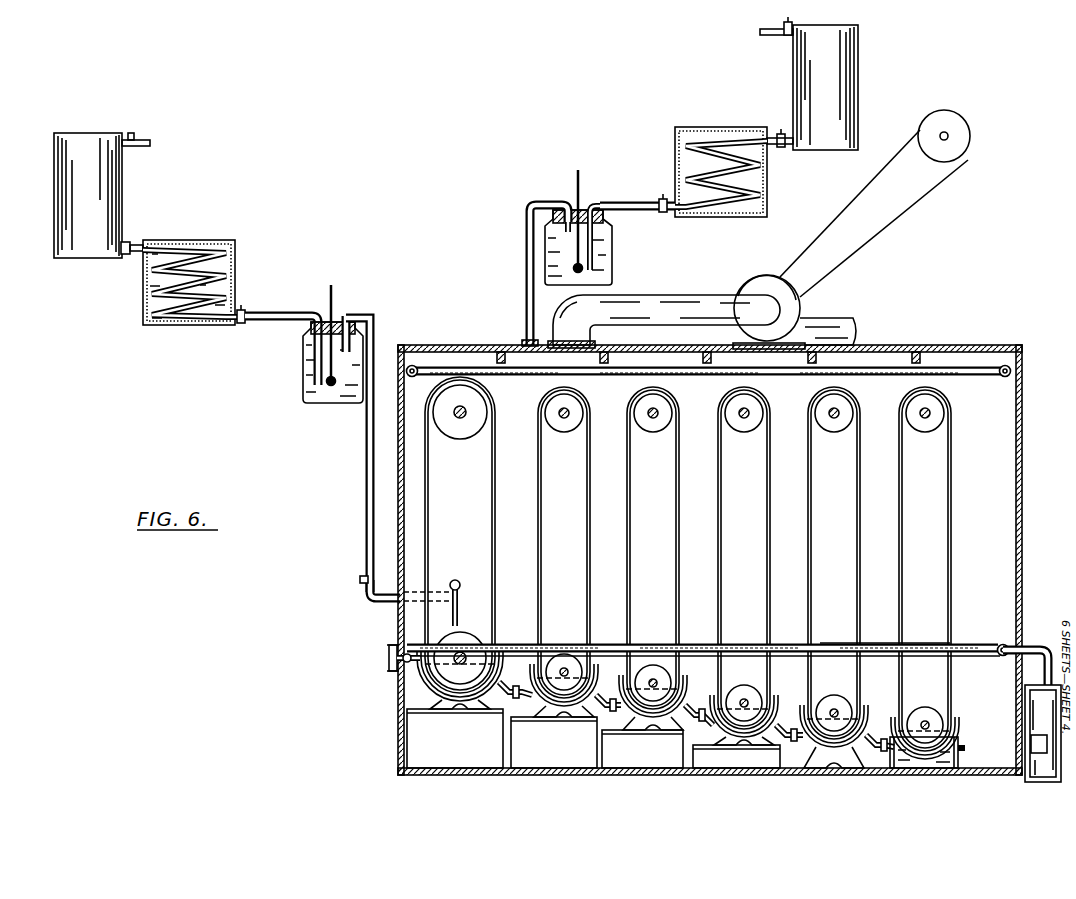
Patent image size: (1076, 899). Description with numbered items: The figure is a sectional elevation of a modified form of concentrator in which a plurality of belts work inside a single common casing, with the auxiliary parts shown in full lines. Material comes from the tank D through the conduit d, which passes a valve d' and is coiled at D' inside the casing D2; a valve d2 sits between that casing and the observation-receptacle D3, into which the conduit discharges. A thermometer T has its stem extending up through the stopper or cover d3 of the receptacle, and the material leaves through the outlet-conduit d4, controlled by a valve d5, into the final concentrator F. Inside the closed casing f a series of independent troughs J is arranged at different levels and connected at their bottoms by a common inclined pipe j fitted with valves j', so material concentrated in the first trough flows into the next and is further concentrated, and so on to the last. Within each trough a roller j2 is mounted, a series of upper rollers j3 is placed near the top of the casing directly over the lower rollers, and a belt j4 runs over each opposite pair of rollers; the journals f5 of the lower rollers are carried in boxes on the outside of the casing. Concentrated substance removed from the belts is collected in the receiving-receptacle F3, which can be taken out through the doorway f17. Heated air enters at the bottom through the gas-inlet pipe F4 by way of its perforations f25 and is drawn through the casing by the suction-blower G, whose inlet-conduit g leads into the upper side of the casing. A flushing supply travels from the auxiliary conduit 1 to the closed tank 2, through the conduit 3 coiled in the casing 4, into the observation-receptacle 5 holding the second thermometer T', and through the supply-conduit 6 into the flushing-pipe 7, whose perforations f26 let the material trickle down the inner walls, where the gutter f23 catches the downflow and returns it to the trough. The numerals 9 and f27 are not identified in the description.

The auxiliary conduit 1 is at (762, 36).
The closed tank 2 is at (825, 87).
The conduit 3 is at (780, 134).
The casing 4 is at (767, 180).
The auxiliary closed observation-receptacle 5 is at (612, 248).
The auxiliary supply-conduit 6 is at (532, 205).
The second thermometer T' is at (586, 215).
The suction-blower G is at (768, 280).
The inlet-conduit of the suction-blower g is at (672, 295).
The blower pipe 9 is at (664, 309).
The flushing-pipe 7 is at (958, 370).
The perforations f26 is at (1011, 374).
The tank D is at (102, 195).
The valve d' is at (133, 232).
The casing D2 is at (235, 255).
The coil D' is at (171, 283).
The valve d2 is at (242, 310).
The conduit d is at (281, 338).
The observation-receptacle D3 is at (303, 372).
The thermometer T is at (336, 333).
The stopper or cover d3 is at (347, 318).
The outlet-conduit d4 is at (372, 318).
The valve d5 is at (360, 578).
The final concentrator F is at (1005, 524).
The closed casing f is at (1028, 562).
The upper rollers j3 is at (920, 428).
The belt j4 is at (538, 476).
The roller j2 is at (688, 687).
The troughs J is at (432, 686).
The common inclined pipe j is at (696, 722).
The valves j' is at (691, 710).
The gutter f23 is at (514, 643).
The perforations f25 is at (964, 657).
The gas-inlet pipe F4 is at (820, 652).
The inlet fitting f27 is at (388, 660).
The receiving-receptacle F3 is at (958, 745).
The doorway f17 is at (962, 736).
The journals f5 is at (1036, 720).